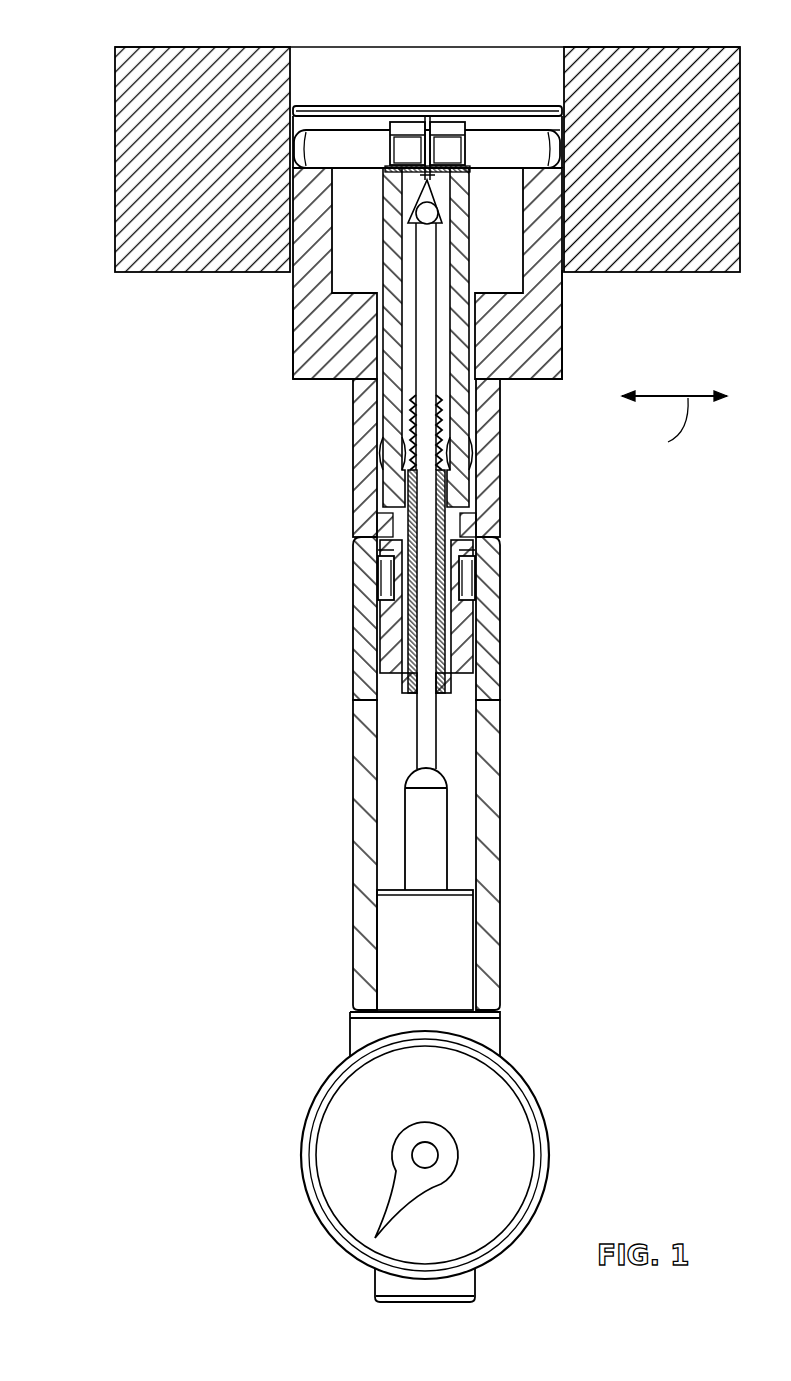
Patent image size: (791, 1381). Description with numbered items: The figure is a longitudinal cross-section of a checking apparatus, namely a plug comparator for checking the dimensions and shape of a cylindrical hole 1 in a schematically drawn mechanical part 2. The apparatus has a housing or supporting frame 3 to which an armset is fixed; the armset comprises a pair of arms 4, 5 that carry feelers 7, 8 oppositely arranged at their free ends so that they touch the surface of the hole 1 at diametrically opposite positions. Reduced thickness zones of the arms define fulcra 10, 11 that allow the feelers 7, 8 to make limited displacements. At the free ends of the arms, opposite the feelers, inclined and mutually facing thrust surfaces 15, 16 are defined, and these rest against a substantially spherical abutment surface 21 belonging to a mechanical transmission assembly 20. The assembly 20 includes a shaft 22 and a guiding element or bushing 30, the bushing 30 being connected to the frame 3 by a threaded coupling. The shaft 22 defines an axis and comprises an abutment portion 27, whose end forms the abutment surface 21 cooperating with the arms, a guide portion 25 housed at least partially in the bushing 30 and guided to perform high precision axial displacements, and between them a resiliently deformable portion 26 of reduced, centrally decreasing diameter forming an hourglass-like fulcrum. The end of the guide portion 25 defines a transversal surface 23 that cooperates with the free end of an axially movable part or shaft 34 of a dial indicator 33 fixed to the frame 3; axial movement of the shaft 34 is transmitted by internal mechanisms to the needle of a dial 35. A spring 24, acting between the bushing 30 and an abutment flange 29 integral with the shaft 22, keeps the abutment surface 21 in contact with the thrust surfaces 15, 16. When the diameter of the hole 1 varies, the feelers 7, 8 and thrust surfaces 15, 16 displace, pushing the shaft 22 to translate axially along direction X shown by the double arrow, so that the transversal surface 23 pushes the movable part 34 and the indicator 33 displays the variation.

The cylindrical hole 1 is at (298, 56).
The mechanical part 2 is at (172, 273).
The housing or supporting frame 3 is at (292, 300).
The arm 4 is at (353, 382).
The arm 5 is at (562, 290).
The feeler 7 is at (342, 147).
The feeler 8 is at (537, 147).
The fulcrum 10 is at (423, 476).
The fulcrum 11 is at (470, 385).
The thrust surface 15 is at (428, 135).
The thrust surface 16 is at (440, 222).
The mechanical transmission assembly 20 is at (470, 728).
The abutment surface 21 is at (470, 200).
The shaft 22 is at (422, 718).
The transversal surface 23 is at (422, 773).
The spring 24 is at (405, 440).
The guide portion 25 is at (390, 633).
The resiliently deformable portion 26 is at (355, 539).
The abutment portion 27 is at (292, 340).
The abutment flange 29 is at (412, 415).
The guiding element or bushing 30 is at (452, 690).
The dial indicator 33 is at (368, 1137).
The axially movable part or shaft 34 is at (432, 862).
The dial 35 is at (340, 1165).